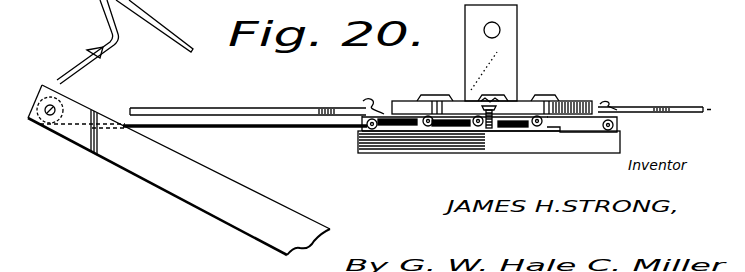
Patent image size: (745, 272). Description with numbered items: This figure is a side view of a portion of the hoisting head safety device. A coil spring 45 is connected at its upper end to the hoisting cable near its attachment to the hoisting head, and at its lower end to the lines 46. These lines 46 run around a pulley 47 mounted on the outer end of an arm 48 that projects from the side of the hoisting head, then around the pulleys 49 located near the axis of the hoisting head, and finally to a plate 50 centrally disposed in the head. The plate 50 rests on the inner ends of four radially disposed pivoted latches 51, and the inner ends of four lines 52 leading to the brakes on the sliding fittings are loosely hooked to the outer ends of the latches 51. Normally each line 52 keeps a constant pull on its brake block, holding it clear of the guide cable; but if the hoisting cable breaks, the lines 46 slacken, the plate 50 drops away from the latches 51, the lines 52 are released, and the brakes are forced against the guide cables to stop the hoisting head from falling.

The coil spring 45 is at (158, 29).
The lines 46 is at (270, 127).
The pulley 47 is at (42, 118).
The arm 48 is at (190, 197).
The pulleys 49 is at (478, 127).
The plate 50 is at (419, 86).
The pivoted latches 51 is at (370, 104).
The lines 52 is at (242, 98).